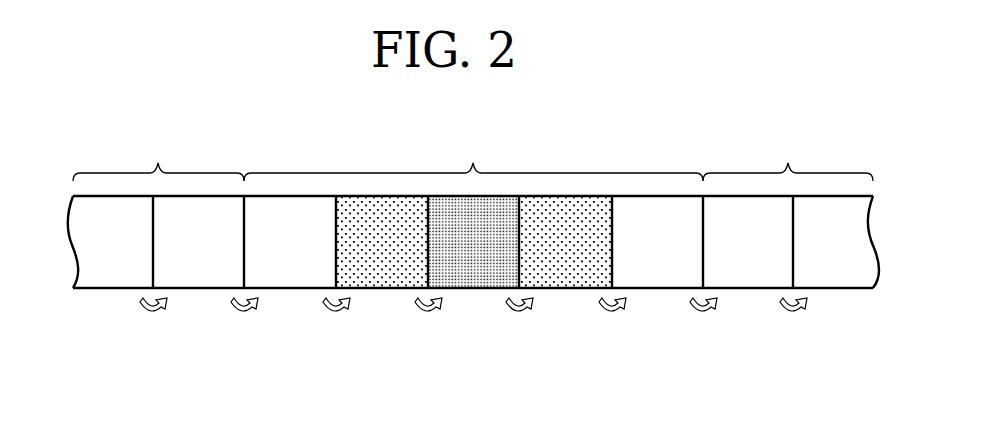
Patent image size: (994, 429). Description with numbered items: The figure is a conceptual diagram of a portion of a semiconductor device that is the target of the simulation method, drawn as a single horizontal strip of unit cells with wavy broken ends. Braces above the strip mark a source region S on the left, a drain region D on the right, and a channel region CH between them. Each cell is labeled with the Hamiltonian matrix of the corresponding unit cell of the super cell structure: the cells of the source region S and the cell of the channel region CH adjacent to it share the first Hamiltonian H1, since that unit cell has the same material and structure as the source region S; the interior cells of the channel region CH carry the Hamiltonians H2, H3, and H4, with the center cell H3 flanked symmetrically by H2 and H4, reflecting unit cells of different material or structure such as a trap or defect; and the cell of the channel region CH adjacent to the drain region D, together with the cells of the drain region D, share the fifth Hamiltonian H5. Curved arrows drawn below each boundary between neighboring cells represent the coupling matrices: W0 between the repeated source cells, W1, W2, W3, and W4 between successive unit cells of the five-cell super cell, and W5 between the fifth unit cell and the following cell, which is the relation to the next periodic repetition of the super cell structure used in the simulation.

The source region S is at (158, 156).
The channel region CH is at (473, 156).
The drain region D is at (788, 156).
The Hamiltonian matrix for the first unit cell H1 is at (204, 242).
The Hamiltonian matrix for the second unit cell H2 is at (382, 242).
The Hamiltonian matrix for the third unit cell H3 is at (474, 242).
The Hamiltonian matrix for the fourth unit cell H4 is at (566, 242).
The Hamiltonian matrix for the fifth unit cell H5 is at (742, 242).
The zeroth width / rotation step W0 is at (201, 329).
The coupling matrix between the first and second unit cells W1 is at (339, 329).
The coupling matrix between the second and third unit cells W2 is at (431, 329).
The coupling matrix between the third and fourth unit cells W3 is at (522, 329).
The coupling matrix between the fourth and fifth unit cells W4 is at (615, 329).
The coupling matrix between the fifth unit cell and the next repeated first unit cel W5 is at (751, 329).